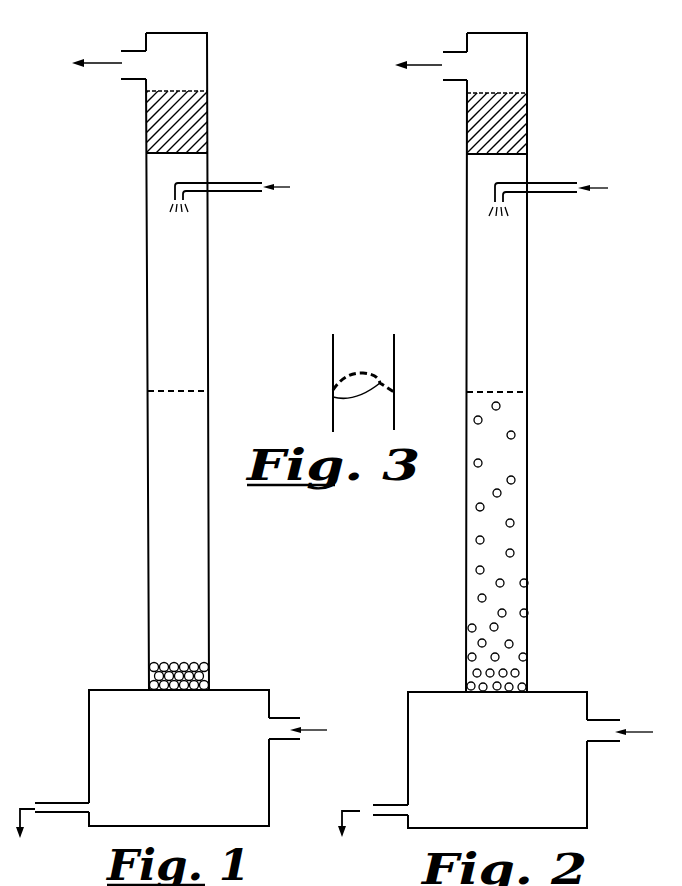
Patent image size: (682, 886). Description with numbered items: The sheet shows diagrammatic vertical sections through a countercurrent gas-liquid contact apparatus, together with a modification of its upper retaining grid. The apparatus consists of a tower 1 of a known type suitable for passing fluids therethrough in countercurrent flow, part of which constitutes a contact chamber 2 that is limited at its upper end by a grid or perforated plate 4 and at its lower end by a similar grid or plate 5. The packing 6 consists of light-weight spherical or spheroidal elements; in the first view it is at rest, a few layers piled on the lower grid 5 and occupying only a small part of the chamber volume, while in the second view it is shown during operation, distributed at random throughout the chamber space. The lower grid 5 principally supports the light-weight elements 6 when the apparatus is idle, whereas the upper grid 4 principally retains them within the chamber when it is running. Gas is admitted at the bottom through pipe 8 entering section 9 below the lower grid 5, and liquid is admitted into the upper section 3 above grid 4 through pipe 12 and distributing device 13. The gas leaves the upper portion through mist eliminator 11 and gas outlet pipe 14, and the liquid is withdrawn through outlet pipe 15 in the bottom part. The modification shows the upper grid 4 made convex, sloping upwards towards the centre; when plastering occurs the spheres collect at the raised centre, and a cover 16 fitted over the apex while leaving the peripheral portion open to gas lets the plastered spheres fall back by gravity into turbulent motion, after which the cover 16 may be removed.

In FIG. 1, the tower 1 is at (208, 360).
In FIG. 2, the tower 1 is at (527, 312).
In FIG. 1, the contact chamber 2 is at (178, 513).
In FIG. 1, the upper section 3 is at (170, 337).
In FIG. 2, the upper section 3 is at (490, 308).
In FIG. 1, the upper grid 4 is at (178, 393).
In FIG. 2, the upper grid 4 is at (493, 388).
In FIG. 3, the upper grid 4 is at (333, 396).
In FIG. 1, the lower grid 5 is at (167, 692).
In FIG. 2, the lower grid 5 is at (487, 693).
In FIG. 1, the light-weight elements 6 is at (163, 672).
In FIG. 2, the light-weight elements 6 is at (474, 463).
In FIG. 1, the gas inlet pipe 8 is at (283, 742).
In FIG. 2, the gas inlet pipe 8 is at (597, 745).
In FIG. 1, the lower section 9 is at (230, 793).
In FIG. 2, the lower section 9 is at (553, 798).
In FIG. 1, the mist eliminator 11 is at (203, 128).
In FIG. 2, the mist eliminator 11 is at (517, 122).
In FIG. 1, the liquid inlet pipe 12 is at (233, 197).
In FIG. 2, the liquid inlet pipe 12 is at (548, 197).
In FIG. 1, the distributing device 13 is at (173, 190).
In FIG. 2, the distributing device 13 is at (490, 193).
In FIG. 1, the gas outlet pipe 14 is at (133, 50).
In FIG. 2, the gas outlet pipe 14 is at (452, 50).
In FIG. 1, the liquid outlet pipe 15 is at (65, 802).
In FIG. 2, the liquid outlet pipe 15 is at (385, 803).
In FIG. 3, the cover 16 is at (357, 375).